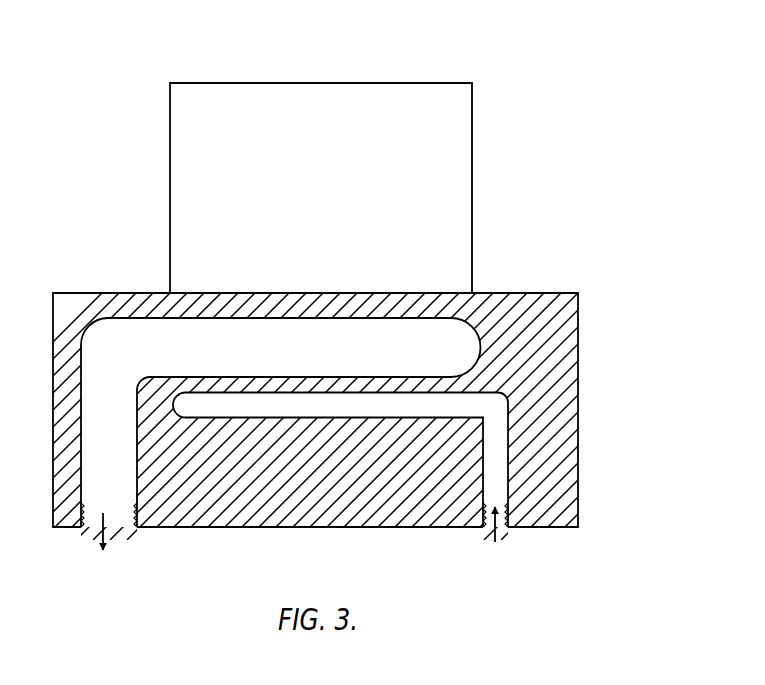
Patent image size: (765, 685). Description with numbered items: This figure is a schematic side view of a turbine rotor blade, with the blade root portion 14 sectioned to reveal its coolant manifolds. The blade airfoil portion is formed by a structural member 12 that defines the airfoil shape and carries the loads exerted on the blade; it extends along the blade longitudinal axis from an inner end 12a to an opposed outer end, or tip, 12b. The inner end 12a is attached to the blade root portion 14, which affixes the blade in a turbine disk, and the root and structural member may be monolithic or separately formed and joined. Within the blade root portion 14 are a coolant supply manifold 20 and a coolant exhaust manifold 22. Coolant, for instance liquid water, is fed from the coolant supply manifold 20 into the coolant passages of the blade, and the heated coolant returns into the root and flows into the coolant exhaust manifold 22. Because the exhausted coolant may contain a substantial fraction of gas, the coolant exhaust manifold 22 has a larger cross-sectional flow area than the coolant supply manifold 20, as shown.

The structural member 12 is at (474, 169).
The inner end 12a is at (473, 292).
The outer end 12b is at (451, 82).
The blade root portion 14 is at (557, 378).
The coolant supply manifold 20 is at (358, 407).
The coolant exhaust manifold 22 is at (319, 358).